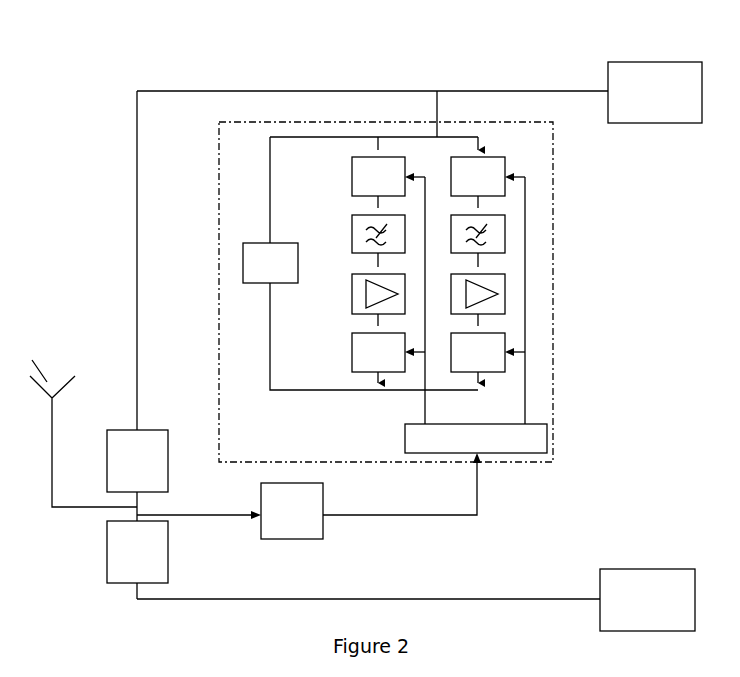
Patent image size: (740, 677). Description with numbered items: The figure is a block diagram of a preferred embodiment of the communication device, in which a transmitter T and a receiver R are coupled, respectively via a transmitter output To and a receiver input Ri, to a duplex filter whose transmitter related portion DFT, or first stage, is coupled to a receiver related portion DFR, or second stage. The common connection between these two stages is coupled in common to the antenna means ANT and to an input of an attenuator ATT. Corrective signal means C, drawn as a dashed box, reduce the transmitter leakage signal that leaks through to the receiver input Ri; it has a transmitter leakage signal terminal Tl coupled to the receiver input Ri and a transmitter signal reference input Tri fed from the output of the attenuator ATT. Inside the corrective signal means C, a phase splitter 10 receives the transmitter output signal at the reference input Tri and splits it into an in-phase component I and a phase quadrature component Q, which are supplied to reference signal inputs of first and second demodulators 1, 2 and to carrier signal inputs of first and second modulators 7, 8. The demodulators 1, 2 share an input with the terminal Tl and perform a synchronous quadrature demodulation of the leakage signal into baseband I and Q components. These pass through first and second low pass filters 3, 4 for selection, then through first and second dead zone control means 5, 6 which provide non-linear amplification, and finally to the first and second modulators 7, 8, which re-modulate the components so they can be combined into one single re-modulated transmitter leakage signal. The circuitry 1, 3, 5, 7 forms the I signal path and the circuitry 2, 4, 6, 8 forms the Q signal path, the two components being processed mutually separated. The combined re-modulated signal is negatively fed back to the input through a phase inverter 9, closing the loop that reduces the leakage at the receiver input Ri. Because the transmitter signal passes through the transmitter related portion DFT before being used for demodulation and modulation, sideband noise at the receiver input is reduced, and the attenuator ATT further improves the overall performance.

The first demodulator 1 is at (388, 176).
The second demodulator 2 is at (488, 176).
The first low pass filter 3 is at (388, 234).
The second low pass filter 4 is at (488, 234).
The first dead zone control means 5 is at (388, 293).
The second dead zone control means 6 is at (488, 293).
The first modulator 7 is at (388, 352).
The second modulator 8 is at (488, 352).
The phase inverter 9 is at (298, 270).
The phase splitter 10 is at (404, 445).
The corrective signal means C is at (553, 397).
The in-phase signal component I is at (427, 424).
The phase quadrature signal component Q is at (521, 423).
The receiver R is at (640, 57).
The receiver input Ri is at (606, 89).
The transmitter leakage signal terminal Tl is at (434, 108).
The transmitter signal reference input Tri is at (478, 481).
The attenuator ATT is at (309, 501).
The antenna means ANT is at (78, 417).
The receiver related portion DFR is at (130, 428).
The transmitter related portion DFT is at (125, 585).
The transmitter T is at (652, 633).
The transmitter output To is at (598, 596).